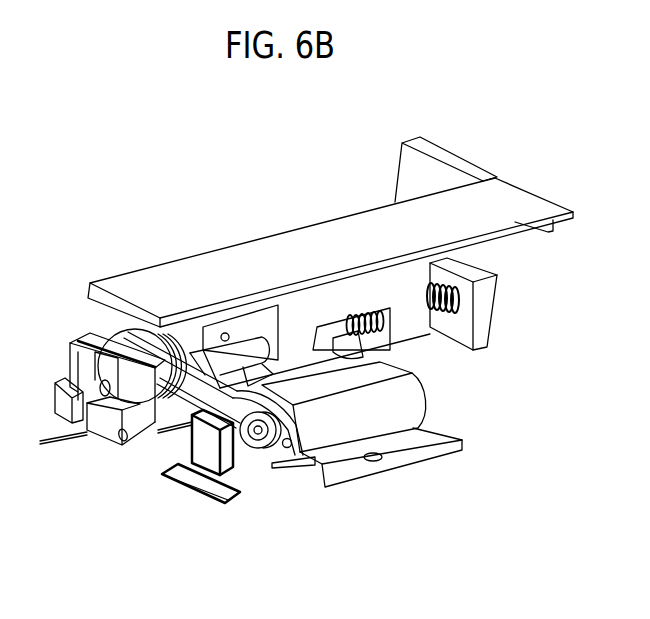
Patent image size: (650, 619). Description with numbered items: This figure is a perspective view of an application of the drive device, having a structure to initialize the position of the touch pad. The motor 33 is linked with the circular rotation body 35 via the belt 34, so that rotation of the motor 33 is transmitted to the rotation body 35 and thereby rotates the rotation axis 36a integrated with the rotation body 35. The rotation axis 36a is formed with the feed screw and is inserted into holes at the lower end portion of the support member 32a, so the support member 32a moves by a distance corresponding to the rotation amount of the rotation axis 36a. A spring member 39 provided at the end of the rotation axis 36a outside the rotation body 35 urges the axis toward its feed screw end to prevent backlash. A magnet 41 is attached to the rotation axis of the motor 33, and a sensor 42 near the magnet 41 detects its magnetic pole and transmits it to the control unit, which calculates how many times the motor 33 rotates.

The support member 32a is at (513, 233).
The motor 33 is at (383, 405).
The belt 34 is at (185, 324).
The rotation body 35 is at (132, 322).
The rotation axis 36a is at (233, 350).
The spring member 39 is at (68, 440).
The magnet 41 is at (235, 470).
The sensor 42 is at (230, 505).